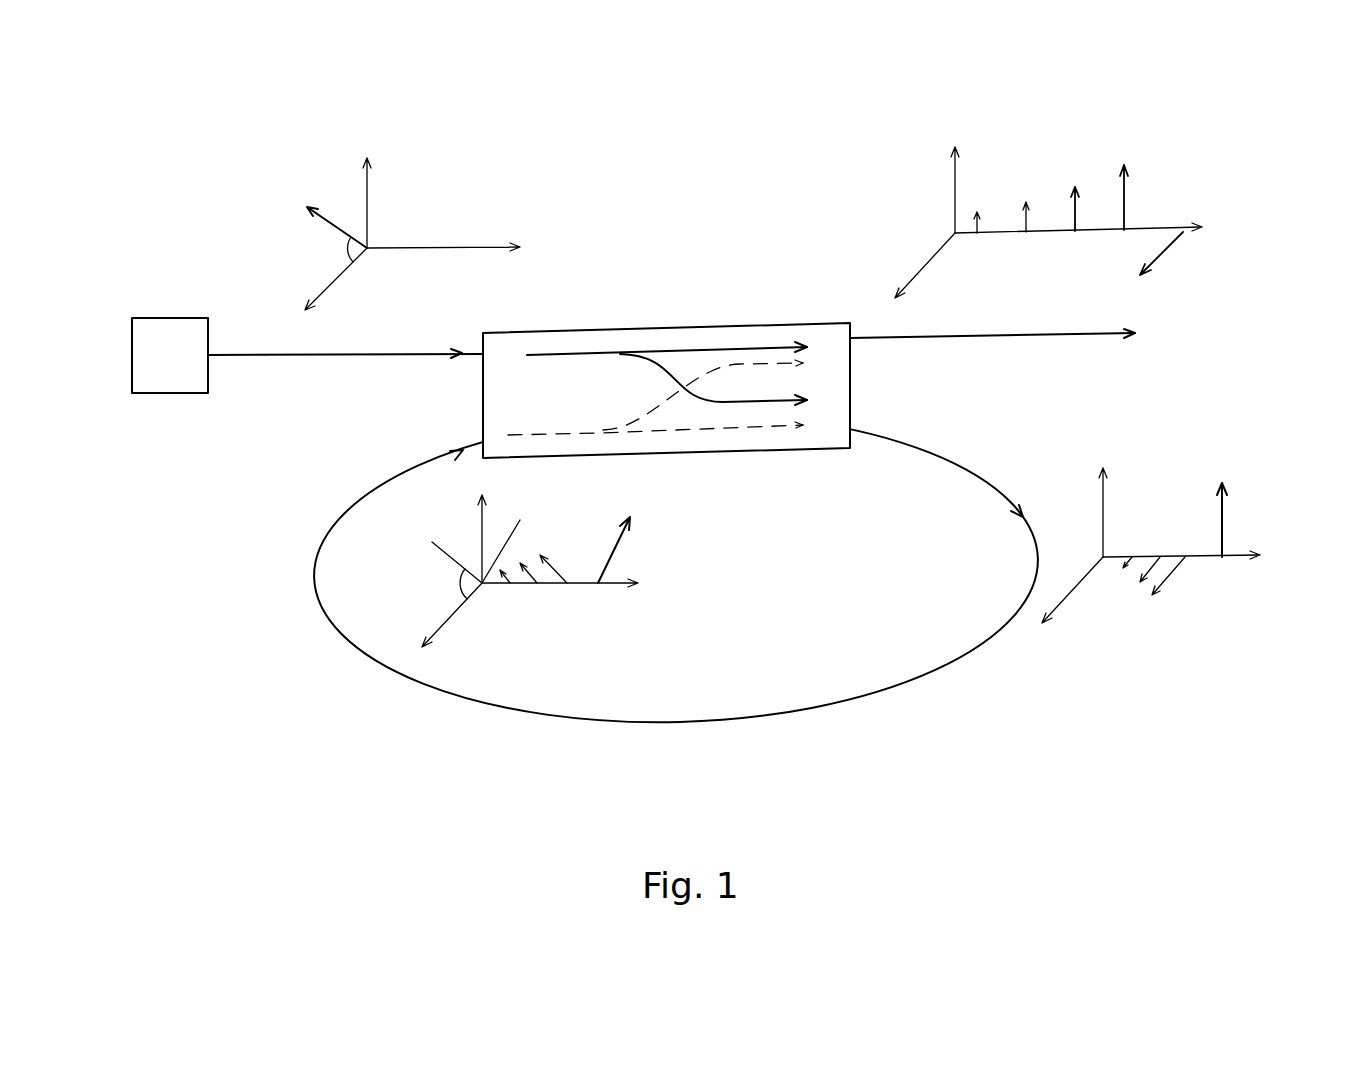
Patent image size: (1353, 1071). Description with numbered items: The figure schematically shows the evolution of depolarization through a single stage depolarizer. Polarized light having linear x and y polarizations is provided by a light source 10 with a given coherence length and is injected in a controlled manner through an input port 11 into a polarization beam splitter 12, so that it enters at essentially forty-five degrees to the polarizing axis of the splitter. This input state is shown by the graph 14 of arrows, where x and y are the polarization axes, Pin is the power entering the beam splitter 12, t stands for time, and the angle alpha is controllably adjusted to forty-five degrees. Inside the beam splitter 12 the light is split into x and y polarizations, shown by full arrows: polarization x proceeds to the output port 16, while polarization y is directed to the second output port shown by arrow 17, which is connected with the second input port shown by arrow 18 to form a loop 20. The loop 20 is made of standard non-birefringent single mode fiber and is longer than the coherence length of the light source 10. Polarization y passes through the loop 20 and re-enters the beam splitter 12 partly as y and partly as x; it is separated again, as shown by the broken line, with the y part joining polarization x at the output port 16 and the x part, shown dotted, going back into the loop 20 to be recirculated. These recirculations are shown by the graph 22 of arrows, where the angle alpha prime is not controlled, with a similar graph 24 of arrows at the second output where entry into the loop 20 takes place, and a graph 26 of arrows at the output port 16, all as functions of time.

The light source 10 is at (158, 330).
The input port 11 is at (342, 355).
The polarization beam splitter 12 is at (722, 310).
The graph of arrows 14 is at (428, 193).
The output port 16 is at (1003, 337).
The arrow indicating second output port 17 is at (958, 462).
The arrow indicating second input port 18 is at (475, 447).
The loop 20 is at (775, 725).
The graph of arrows 22 is at (710, 553).
The graph of arrows 24 is at (1295, 513).
The graph of arrows 26 is at (1213, 170).